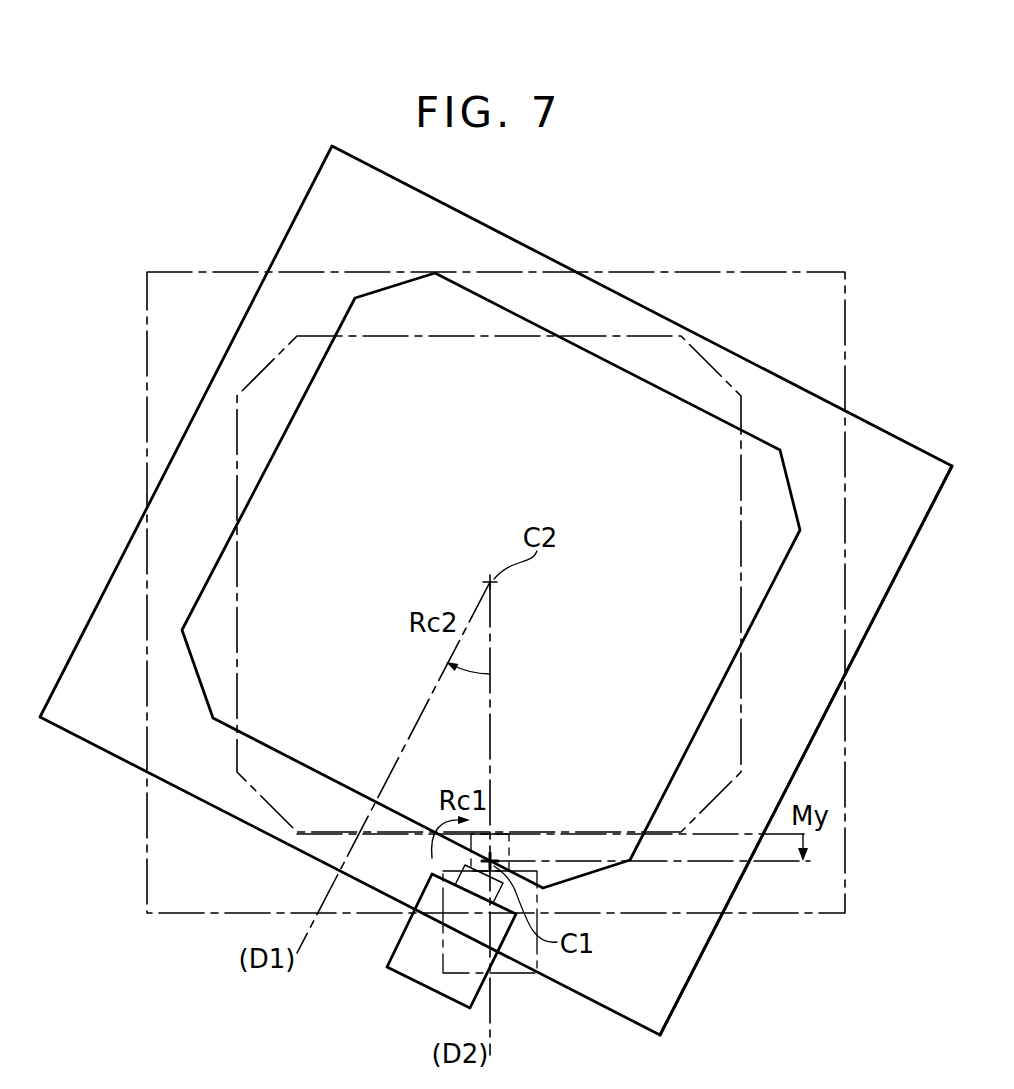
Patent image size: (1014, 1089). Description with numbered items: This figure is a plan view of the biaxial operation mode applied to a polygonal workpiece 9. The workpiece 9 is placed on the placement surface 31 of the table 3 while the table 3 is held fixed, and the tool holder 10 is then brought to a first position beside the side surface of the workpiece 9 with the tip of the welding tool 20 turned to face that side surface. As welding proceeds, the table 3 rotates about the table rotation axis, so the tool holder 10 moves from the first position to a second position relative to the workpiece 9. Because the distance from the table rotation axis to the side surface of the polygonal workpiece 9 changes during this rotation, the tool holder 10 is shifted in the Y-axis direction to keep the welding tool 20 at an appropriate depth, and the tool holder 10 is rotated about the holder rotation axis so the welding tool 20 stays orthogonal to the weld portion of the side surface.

The table 3 is at (625, 268).
The placement surface 31 is at (888, 452).
The workpiece 9 is at (360, 294).
The tool holder 10 is at (412, 968).
The welding tool 20 is at (457, 860).